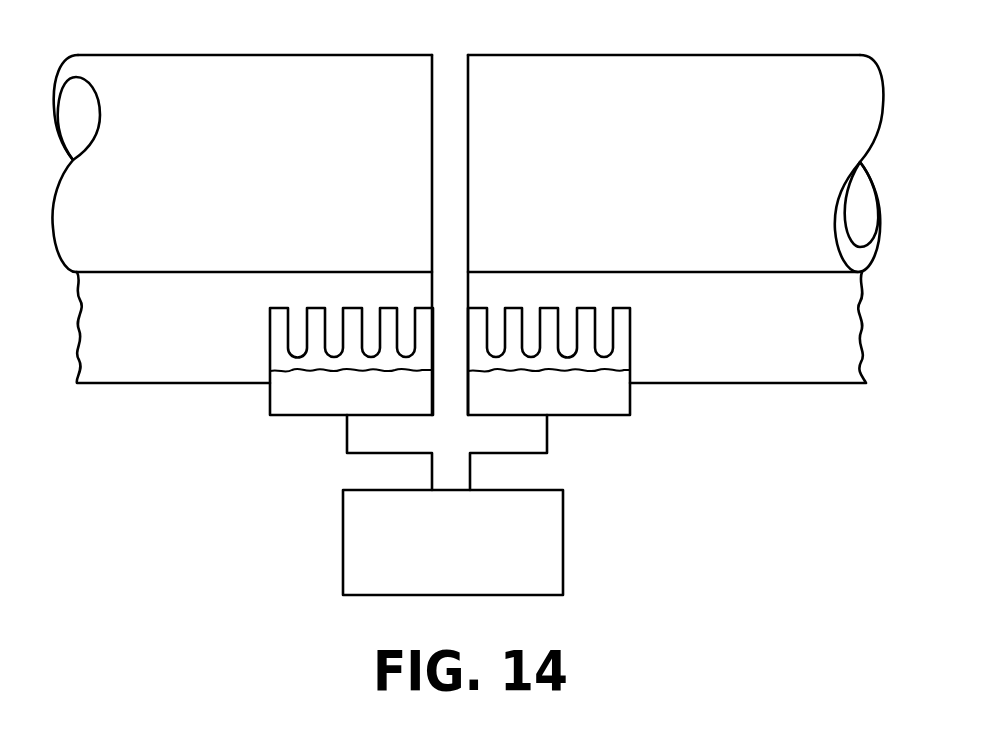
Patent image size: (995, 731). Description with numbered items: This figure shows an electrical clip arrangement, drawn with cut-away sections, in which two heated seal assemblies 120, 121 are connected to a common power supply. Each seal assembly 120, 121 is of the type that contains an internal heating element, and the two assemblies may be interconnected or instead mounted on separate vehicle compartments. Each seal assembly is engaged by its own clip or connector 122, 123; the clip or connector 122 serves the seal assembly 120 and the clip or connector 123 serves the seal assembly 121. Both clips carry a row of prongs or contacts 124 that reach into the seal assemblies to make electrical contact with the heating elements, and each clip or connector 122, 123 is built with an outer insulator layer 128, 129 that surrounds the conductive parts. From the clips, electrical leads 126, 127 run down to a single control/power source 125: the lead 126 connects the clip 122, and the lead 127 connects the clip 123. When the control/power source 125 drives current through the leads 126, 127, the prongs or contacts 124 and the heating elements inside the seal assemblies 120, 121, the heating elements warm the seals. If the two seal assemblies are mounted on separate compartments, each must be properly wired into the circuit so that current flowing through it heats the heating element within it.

The seal assembly 120 is at (625, 55).
The seal assembly 121 is at (280, 55).
The clip or connector 122 is at (659, 403).
The clip or connector 123 is at (247, 405).
The prongs or contacts 124 is at (383, 315).
The control/power source 125 is at (566, 540).
The electrical lead 126 is at (548, 438).
The electrical lead 127 is at (341, 440).
The outer insulator layer 128 is at (577, 408).
The outer insulator layer 129 is at (372, 406).